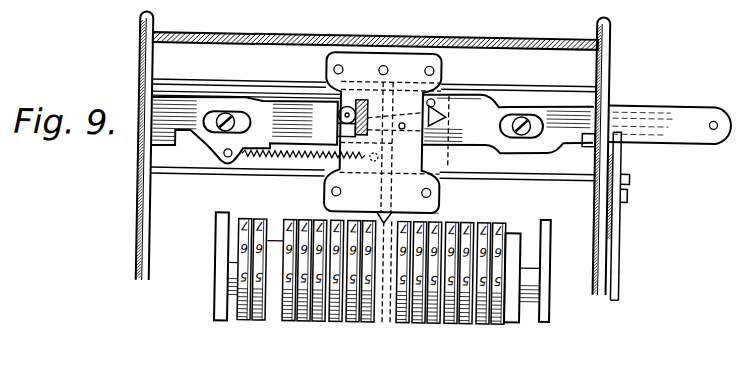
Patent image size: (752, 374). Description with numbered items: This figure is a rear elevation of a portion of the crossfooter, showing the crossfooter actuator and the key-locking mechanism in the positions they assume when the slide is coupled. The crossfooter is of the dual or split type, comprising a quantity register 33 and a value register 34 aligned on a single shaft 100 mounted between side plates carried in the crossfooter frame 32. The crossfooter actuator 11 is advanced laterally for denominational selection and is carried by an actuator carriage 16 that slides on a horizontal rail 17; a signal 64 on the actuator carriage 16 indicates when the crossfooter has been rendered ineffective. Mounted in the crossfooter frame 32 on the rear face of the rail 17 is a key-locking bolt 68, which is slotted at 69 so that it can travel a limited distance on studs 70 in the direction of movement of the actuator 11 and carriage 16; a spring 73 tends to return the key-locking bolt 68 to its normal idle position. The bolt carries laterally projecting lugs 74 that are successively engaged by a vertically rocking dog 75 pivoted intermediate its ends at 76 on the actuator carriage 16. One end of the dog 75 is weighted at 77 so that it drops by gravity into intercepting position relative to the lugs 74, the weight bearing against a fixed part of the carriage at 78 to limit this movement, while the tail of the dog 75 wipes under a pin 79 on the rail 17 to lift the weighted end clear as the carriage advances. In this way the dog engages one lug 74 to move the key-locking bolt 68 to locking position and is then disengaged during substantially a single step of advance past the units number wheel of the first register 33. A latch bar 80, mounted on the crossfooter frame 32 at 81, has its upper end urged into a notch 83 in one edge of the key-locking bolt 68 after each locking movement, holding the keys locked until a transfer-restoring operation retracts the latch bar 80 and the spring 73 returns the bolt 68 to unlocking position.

The crossfooter frame 32 is at (141, 66).
The actuator carriage 16 is at (358, 60).
The horizontal rail 17 is at (266, 84).
The studs 70 is at (216, 116).
The slot 69 is at (217, 127).
The laterally projecting lugs 74 is at (155, 143).
The spring 73 is at (250, 159).
The weight 77 is at (338, 107).
The fixed part of the carriage 78 is at (366, 101).
The vertically rocking dog 75 is at (447, 116).
The pin 79 is at (444, 96).
The pivot 76 is at (402, 129).
The key-locking bolt 68 is at (649, 105).
The notch 83 is at (618, 129).
The mounting of the latch bar 81 is at (628, 178).
The latch bar 80 is at (614, 221).
The signal 64 is at (444, 211).
The value register 34 is at (306, 322).
The crossfooter actuator 11 is at (389, 323).
The quantity register 33 is at (473, 319).
The shaft 100 is at (534, 305).